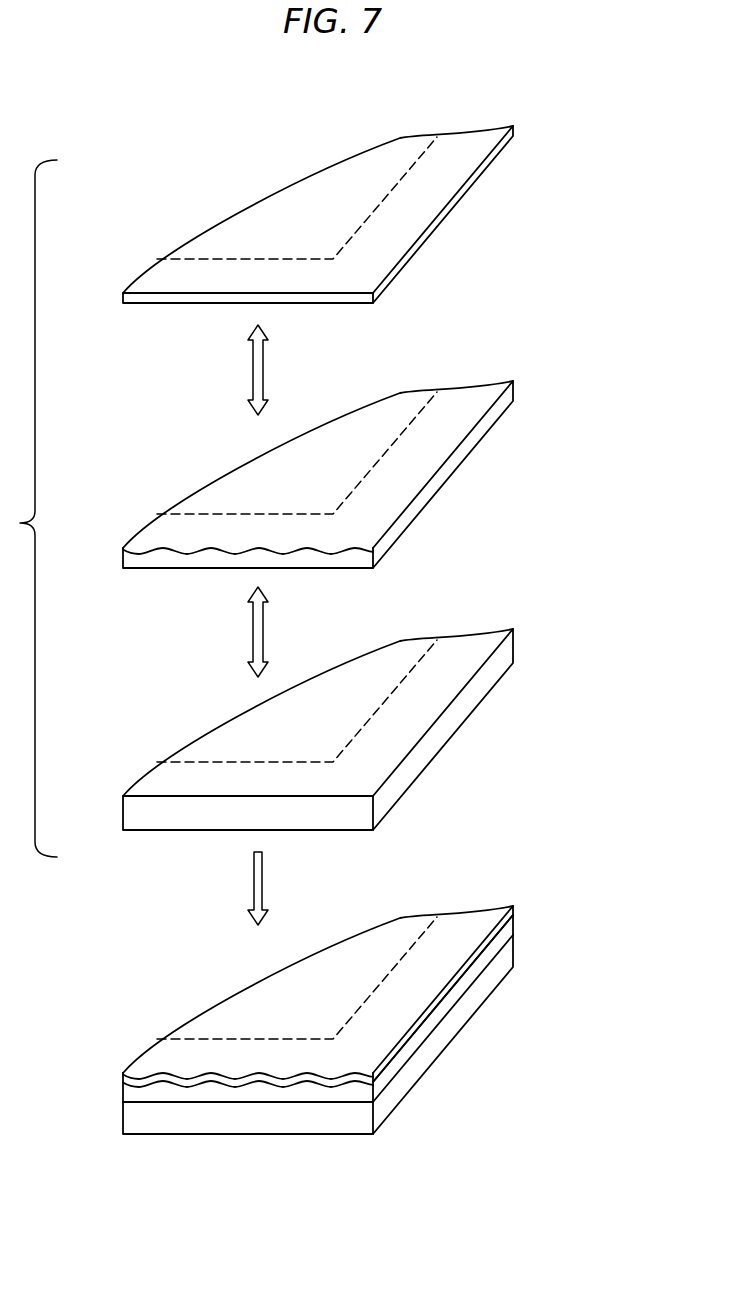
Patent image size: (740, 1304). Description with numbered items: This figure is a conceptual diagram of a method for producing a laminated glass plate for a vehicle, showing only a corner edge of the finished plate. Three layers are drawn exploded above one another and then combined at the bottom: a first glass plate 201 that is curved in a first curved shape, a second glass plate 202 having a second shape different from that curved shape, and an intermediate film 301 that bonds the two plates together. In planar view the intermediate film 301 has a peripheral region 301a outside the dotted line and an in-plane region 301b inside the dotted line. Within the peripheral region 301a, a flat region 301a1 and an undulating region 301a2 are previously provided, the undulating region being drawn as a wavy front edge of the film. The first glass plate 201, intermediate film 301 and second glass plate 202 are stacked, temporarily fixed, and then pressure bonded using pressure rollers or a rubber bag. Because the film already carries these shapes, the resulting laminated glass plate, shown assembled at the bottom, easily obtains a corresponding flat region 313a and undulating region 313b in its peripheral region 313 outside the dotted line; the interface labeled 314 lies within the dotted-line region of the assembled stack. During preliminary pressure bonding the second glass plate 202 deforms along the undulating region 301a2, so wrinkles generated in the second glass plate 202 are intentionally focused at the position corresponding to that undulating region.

The second glass plate 202 is at (460, 196).
The intermediate film 301 is at (363, 741).
The in-plane region 301b is at (352, 447).
The peripheral region 301a is at (353, 535).
The flat region 301a1 is at (387, 498).
The undulating region 301a2 is at (283, 552).
The first glass plate 201 is at (510, 657).
The flat interface 314 is at (365, 970).
The peripheral region 313 is at (343, 1019).
The flat region 313a is at (380, 1030).
The undulating region 313b is at (338, 1070).